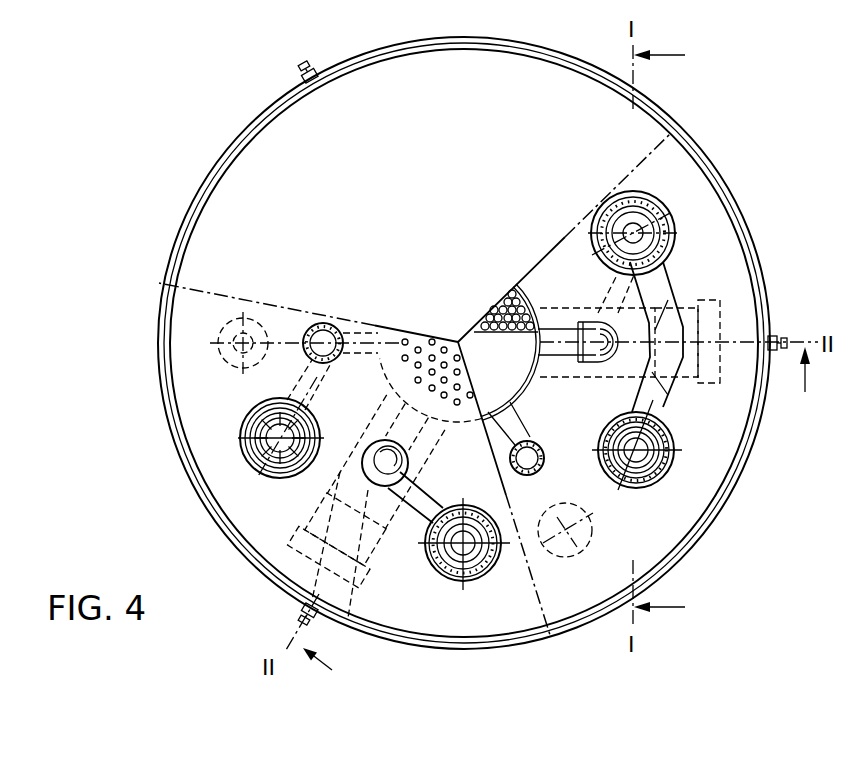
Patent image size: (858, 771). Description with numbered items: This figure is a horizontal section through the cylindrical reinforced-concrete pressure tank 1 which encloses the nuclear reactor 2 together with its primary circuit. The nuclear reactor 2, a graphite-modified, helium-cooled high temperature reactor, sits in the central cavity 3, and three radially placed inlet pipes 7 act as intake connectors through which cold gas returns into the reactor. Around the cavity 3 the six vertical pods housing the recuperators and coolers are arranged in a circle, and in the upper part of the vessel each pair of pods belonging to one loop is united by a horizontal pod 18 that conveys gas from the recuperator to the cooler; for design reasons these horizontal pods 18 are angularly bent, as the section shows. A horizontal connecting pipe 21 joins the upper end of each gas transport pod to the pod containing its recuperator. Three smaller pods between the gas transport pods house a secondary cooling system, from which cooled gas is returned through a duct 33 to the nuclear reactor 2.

The pressure-tight tank 1 is at (690, 180).
The nuclear reactor 2 is at (530, 300).
The cavity 3 is at (538, 370).
The inlet pipe 7 is at (549, 340).
The horizontal pod 18 is at (660, 398).
The horizontal connecting pipe 21 is at (419, 492).
The duct 33 is at (507, 413).